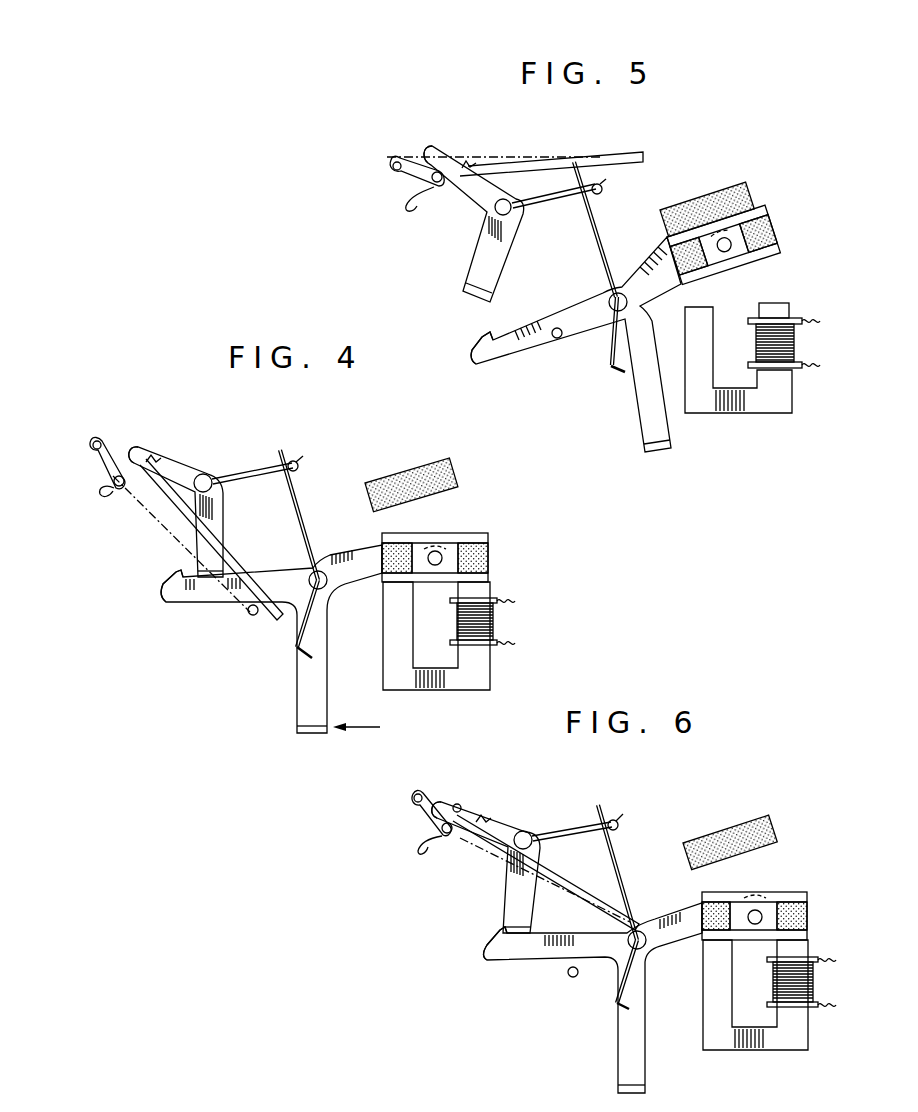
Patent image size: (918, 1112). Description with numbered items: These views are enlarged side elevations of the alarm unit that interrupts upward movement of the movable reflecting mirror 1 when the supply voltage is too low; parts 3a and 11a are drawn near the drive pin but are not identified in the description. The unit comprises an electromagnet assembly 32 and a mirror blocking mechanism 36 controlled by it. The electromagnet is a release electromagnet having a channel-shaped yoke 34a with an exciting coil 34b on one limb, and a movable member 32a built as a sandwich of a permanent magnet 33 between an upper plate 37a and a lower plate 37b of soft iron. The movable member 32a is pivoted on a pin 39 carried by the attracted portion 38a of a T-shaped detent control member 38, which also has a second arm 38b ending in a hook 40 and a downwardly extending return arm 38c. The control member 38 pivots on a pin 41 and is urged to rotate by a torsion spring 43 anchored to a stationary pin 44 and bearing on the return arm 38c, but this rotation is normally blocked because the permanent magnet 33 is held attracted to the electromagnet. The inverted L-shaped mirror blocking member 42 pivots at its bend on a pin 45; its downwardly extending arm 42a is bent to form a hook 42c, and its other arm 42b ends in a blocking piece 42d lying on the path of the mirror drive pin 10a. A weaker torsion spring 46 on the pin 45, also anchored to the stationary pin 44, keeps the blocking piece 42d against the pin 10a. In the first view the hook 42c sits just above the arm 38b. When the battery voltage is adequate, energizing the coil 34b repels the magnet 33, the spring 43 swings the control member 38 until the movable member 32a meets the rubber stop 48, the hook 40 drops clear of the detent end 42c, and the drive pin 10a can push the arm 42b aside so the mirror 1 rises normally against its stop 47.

In FIG. 5, the movable reflecting mirror 1 is at (553, 161).
In FIG. 4, the movable reflecting mirror 1 is at (158, 530).
In FIG. 6, the movable reflecting mirror 1 is at (575, 876).
In FIG. 5, the pivot pin of lever 3a is at (395, 162).
In FIG. 4, the pivot pin of lever 3a is at (95, 441).
In FIG. 6, the pivot pin of lever 3a is at (412, 796).
In FIG. 5, the mirror drive pin 10a is at (438, 183).
In FIG. 4, the mirror drive pin 10a is at (117, 488).
In FIG. 6, the mirror drive pin 10a is at (450, 836).
In FIG. 5, the hook member 11a is at (405, 203).
In FIG. 4, the hook member 11a is at (100, 483).
In FIG. 6, the hook member 11a is at (416, 846).
In FIG. 5, the electromagnet assembly 32 is at (753, 309).
In FIG. 4, the electromagnet assembly 32 is at (481, 612).
In FIG. 6, the electromagnet assembly 32 is at (778, 955).
In FIG. 5, the movable member 32a is at (751, 228).
In FIG. 4, the movable member 32a is at (481, 545).
In FIG. 6, the movable member 32a is at (774, 880).
In FIG. 5, the permanent magnet 33 is at (783, 212).
In FIG. 4, the permanent magnet 33 is at (490, 560).
In FIG. 6, the permanent magnet 33 is at (810, 912).
In FIG. 5, the channel-shaped yoke 34a is at (748, 412).
In FIG. 4, the channel-shaped yoke 34a is at (428, 690).
In FIG. 6, the channel-shaped yoke 34a is at (752, 1051).
In FIG. 5, the exciting coil 34b is at (795, 360).
In FIG. 4, the exciting coil 34b is at (516, 630).
In FIG. 6, the exciting coil 34b is at (800, 1000).
In FIG. 5, the mirror blocking mechanism 36 is at (562, 341).
In FIG. 4, the mirror blocking mechanism 36 is at (263, 626).
In FIG. 6, the mirror blocking mechanism 36 is at (578, 986).
In FIG. 4, the upper plate 37a is at (475, 538).
In FIG. 4, the lower plate 37b is at (490, 575).
In FIG. 5, the detent control member 38 is at (562, 341).
In FIG. 4, the detent control member 38 is at (263, 629).
In FIG. 6, the detent control member 38 is at (578, 986).
In FIG. 5, the attracted portion 38a is at (658, 264).
In FIG. 4, the attracted portion 38a is at (366, 584).
In FIG. 6, the attracted portion 38a is at (681, 913).
In FIG. 5, the second arm 38b is at (510, 348).
In FIG. 4, the second arm 38b is at (232, 603).
In FIG. 6, the second arm 38b is at (533, 962).
In FIG. 5, the return arm 38c is at (640, 420).
In FIG. 4, the return arm 38c is at (298, 705).
In FIG. 6, the return arm 38c is at (647, 1079).
In FIG. 4, the pin 39 is at (435, 550).
In FIG. 5, the hook 40 is at (480, 337).
In FIG. 4, the hook 40 is at (174, 579).
In FIG. 6, the hook 40 is at (497, 937).
In FIG. 5, the pin 41 is at (612, 293).
In FIG. 4, the pin 41 is at (310, 576).
In FIG. 6, the pin 41 is at (645, 950).
In FIG. 5, the mirror blocking member 42 is at (483, 207).
In FIG. 4, the mirror blocking member 42 is at (183, 526).
In FIG. 6, the mirror blocking member 42 is at (477, 849).
In FIG. 5, the downwardly extending arm 42a is at (500, 232).
In FIG. 4, the downwardly extending arm 42a is at (216, 530).
In FIG. 6, the downwardly extending arm 42a is at (517, 863).
In FIG. 5, the arm 42b is at (474, 166).
In FIG. 4, the arm 42b is at (153, 458).
In FIG. 6, the arm 42b is at (481, 815).
In FIG. 5, the hook 42c is at (490, 294).
In FIG. 4, the hook 42c is at (202, 595).
In FIG. 6, the hook 42c is at (506, 925).
In FIG. 5, the blocking piece 42d is at (432, 148).
In FIG. 4, the blocking piece 42d is at (134, 452).
In FIG. 6, the blocking piece 42d is at (439, 803).
In FIG. 5, the torsion spring 43 is at (596, 218).
In FIG. 4, the torsion spring 43 is at (303, 500).
In FIG. 6, the torsion spring 43 is at (618, 860).
In FIG. 5, the stationary pin 44 is at (603, 188).
In FIG. 4, the stationary pin 44 is at (299, 465).
In FIG. 6, the stationary pin 44 is at (620, 825).
In FIG. 5, the pin 45 is at (495, 210).
In FIG. 4, the pin 45 is at (210, 479).
In FIG. 6, the pin 45 is at (523, 830).
In FIG. 5, the torsion spring 46 is at (570, 196).
In FIG. 4, the torsion spring 46 is at (255, 468).
In FIG. 6, the torsion spring 46 is at (570, 830).
In FIG. 5, the stop 47 is at (560, 338).
In FIG. 4, the stop 47 is at (257, 615).
In FIG. 6, the stop 47 is at (573, 978).
In FIG. 5, the stop 48 is at (690, 206).
In FIG. 4, the stop 48 is at (397, 478).
In FIG. 6, the stop 48 is at (706, 838).